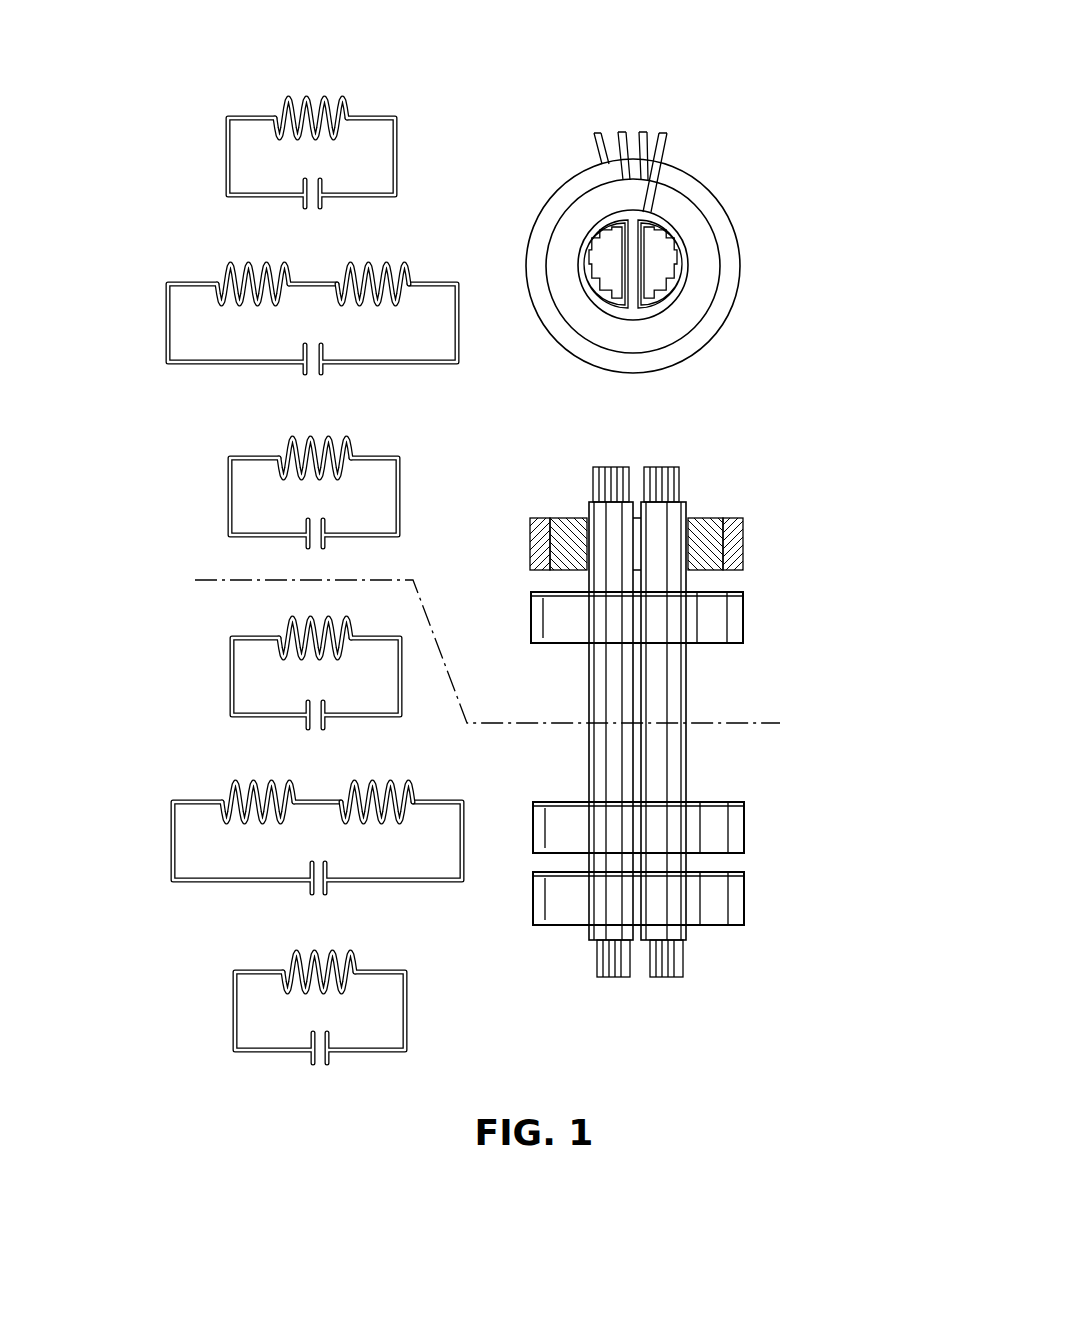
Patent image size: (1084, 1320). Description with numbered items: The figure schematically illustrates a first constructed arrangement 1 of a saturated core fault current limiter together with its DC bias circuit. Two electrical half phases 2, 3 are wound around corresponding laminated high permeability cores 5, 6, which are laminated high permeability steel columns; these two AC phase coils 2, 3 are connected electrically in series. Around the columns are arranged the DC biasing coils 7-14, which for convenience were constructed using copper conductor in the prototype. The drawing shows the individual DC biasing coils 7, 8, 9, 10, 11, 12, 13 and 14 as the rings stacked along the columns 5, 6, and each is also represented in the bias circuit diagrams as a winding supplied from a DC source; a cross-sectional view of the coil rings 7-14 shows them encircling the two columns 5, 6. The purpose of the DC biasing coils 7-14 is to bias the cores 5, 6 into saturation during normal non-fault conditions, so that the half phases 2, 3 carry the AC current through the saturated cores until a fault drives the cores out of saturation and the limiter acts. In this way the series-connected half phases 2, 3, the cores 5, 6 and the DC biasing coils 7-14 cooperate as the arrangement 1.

The first constructed arrangement 1 is at (685, 686).
The electrical half phase 2 is at (586, 696).
The electrical half phase 3 is at (690, 696).
The laminated high permeability core 5 is at (607, 467).
The laminated high permeability core 6 is at (663, 467).
The DC biasing coil 7 is at (782, 541).
The DC biasing coil 8 is at (777, 617).
The DC biasing coil 9 is at (785, 836).
The DC biasing coil 10 is at (800, 913).
The DC biasing coil 11 is at (703, 518).
The DC biasing coil 12 is at (777, 672).
The DC biasing coil 13 is at (780, 773).
The DC biasing coil 14 is at (745, 968).
The DC biasing coils 7-14 is at (728, 215).